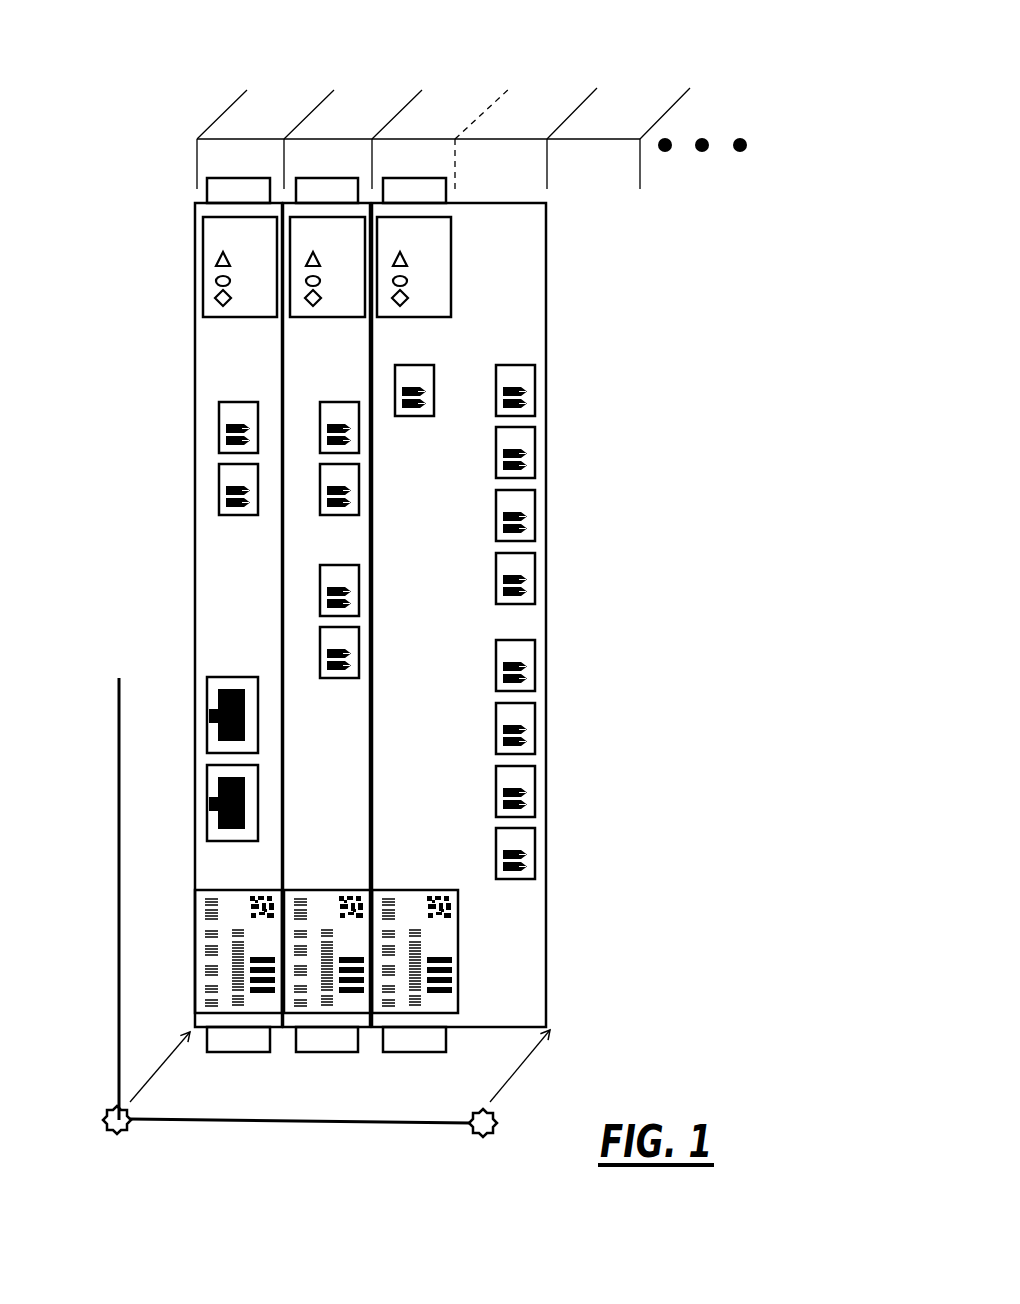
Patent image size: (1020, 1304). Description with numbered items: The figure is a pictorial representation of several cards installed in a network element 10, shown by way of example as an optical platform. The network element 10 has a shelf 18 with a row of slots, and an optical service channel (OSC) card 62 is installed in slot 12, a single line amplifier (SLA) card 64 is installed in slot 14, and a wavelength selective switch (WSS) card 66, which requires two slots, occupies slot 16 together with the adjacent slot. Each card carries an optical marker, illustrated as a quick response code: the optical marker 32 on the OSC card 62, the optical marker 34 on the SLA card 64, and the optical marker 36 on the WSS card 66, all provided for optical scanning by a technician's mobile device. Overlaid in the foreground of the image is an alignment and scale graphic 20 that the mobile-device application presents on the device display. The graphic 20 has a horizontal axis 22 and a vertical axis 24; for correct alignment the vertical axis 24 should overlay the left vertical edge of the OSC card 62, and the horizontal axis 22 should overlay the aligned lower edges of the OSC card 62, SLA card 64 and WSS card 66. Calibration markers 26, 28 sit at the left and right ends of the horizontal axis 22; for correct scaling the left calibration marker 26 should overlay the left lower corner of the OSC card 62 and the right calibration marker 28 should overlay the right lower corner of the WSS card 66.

The network element 10 is at (533, 55).
The slot 12 is at (217, 565).
The slot 14 is at (318, 565).
The slot 16 is at (480, 115).
The shelf 18 is at (712, 92).
The alignment and scale graphic 20 is at (320, 893).
The horizontal axis 22 is at (317, 1122).
The vertical axis 24 is at (125, 920).
The left calibration marker 26 is at (103, 1138).
The right calibration marker 28 is at (471, 1130).
The optical marker 32 is at (272, 918).
The optical marker 34 is at (362, 918).
The optical marker 36 is at (452, 918).
The optical service channel (OSC) card 62 is at (222, 190).
The single line amplifier (SLA) card 64 is at (333, 190).
The wavelength selective switch (WSS) card 66 is at (447, 595).